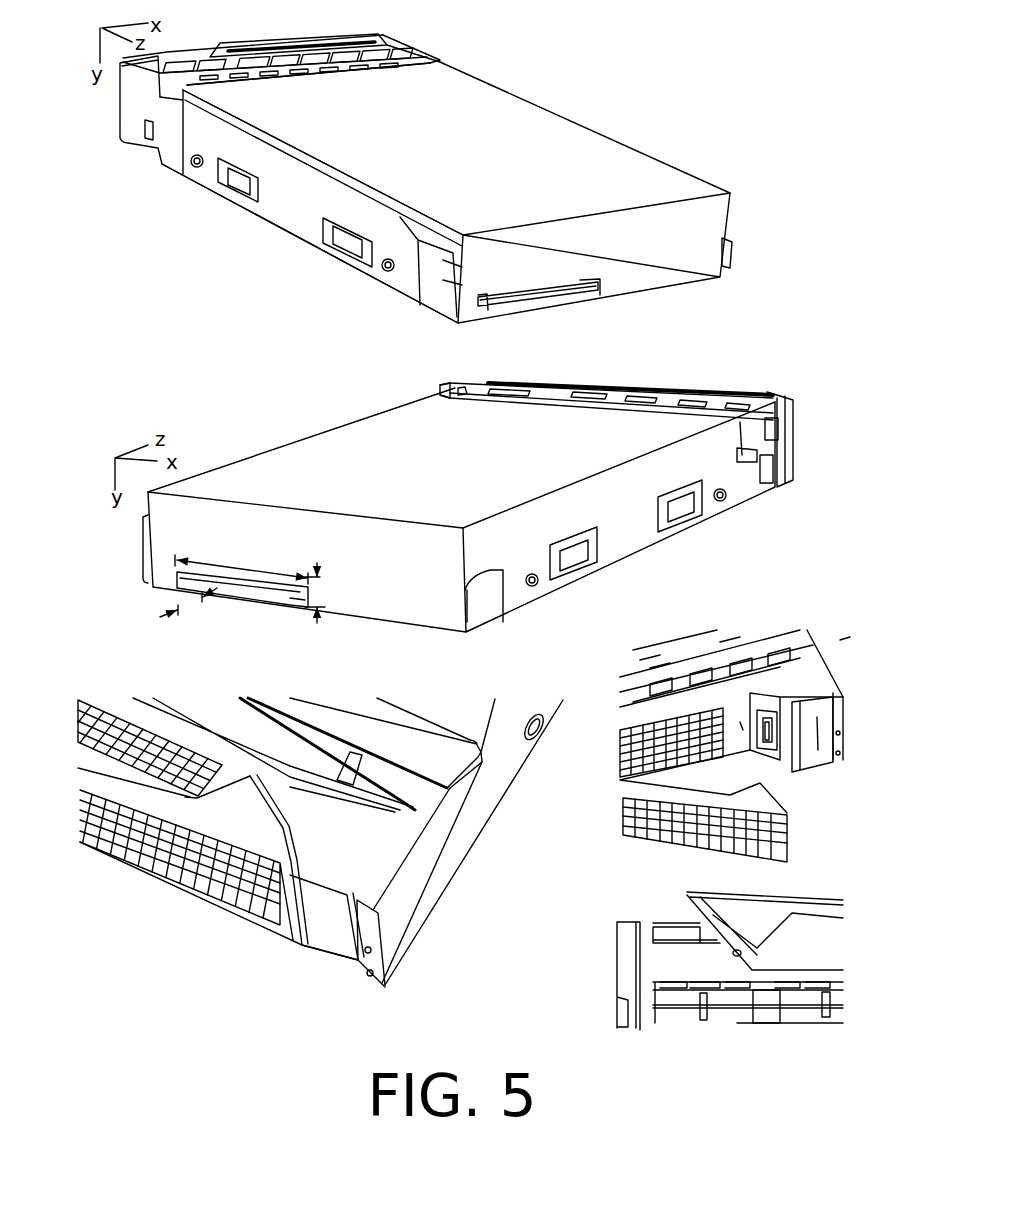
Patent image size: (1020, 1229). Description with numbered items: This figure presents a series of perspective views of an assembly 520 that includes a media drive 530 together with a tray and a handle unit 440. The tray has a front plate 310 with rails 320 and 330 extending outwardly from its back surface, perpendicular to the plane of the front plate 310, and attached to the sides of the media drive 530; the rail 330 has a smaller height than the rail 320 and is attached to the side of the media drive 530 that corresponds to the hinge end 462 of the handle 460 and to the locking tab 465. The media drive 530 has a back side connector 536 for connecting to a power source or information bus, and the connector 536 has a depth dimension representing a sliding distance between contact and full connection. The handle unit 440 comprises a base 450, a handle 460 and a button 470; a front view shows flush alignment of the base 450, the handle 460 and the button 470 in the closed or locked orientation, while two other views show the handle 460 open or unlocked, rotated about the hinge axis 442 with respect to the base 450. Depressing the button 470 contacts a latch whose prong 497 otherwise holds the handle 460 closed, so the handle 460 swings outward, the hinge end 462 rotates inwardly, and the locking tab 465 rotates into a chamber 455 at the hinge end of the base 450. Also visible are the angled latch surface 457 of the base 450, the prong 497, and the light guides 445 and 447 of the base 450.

The front plate 310 is at (423, 62).
The rail 320 is at (178, 160).
The rail 330 is at (728, 258).
The handle unit 440 is at (262, 30).
The hinge axis 442 is at (770, 392).
The light guide 445 is at (375, 955).
The light guide 447 is at (385, 982).
The base 450 is at (136, 112).
The chamber 455 is at (742, 445).
The latch surface 457 is at (760, 750).
The handle 460 is at (307, 43).
The hinge end 462 is at (795, 410).
The locking tab 465 is at (780, 430).
The button 470 is at (323, 948).
The prong 497 is at (762, 745).
The assembly 520 is at (645, 99).
The media drive 530 is at (444, 141).
The connector 536 is at (568, 267).